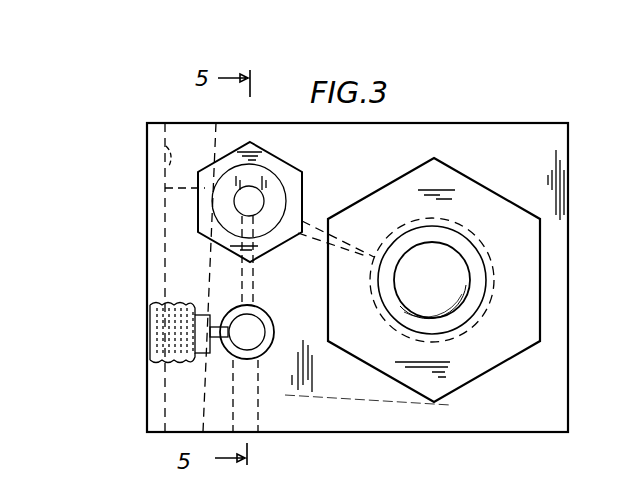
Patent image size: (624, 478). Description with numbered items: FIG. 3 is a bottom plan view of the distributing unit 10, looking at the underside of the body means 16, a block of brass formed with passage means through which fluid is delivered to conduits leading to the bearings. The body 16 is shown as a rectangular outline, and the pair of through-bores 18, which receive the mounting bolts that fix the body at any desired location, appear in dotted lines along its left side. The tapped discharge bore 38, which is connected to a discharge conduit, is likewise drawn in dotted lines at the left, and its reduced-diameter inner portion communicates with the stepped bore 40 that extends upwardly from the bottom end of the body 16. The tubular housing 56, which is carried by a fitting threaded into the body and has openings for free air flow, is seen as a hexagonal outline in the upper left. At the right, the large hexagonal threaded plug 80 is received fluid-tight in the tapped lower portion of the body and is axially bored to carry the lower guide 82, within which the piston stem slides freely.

The fastening assembly 10 is at (343, 245).
The body means 16 is at (555, 156).
The through-bores 18 is at (160, 167).
The tapped discharge bore 38 is at (148, 333).
The stepped bore 40 is at (266, 316).
The tubular housing 56 is at (300, 173).
The threaded plug 80 is at (522, 222).
The lower guide 82 is at (478, 286).